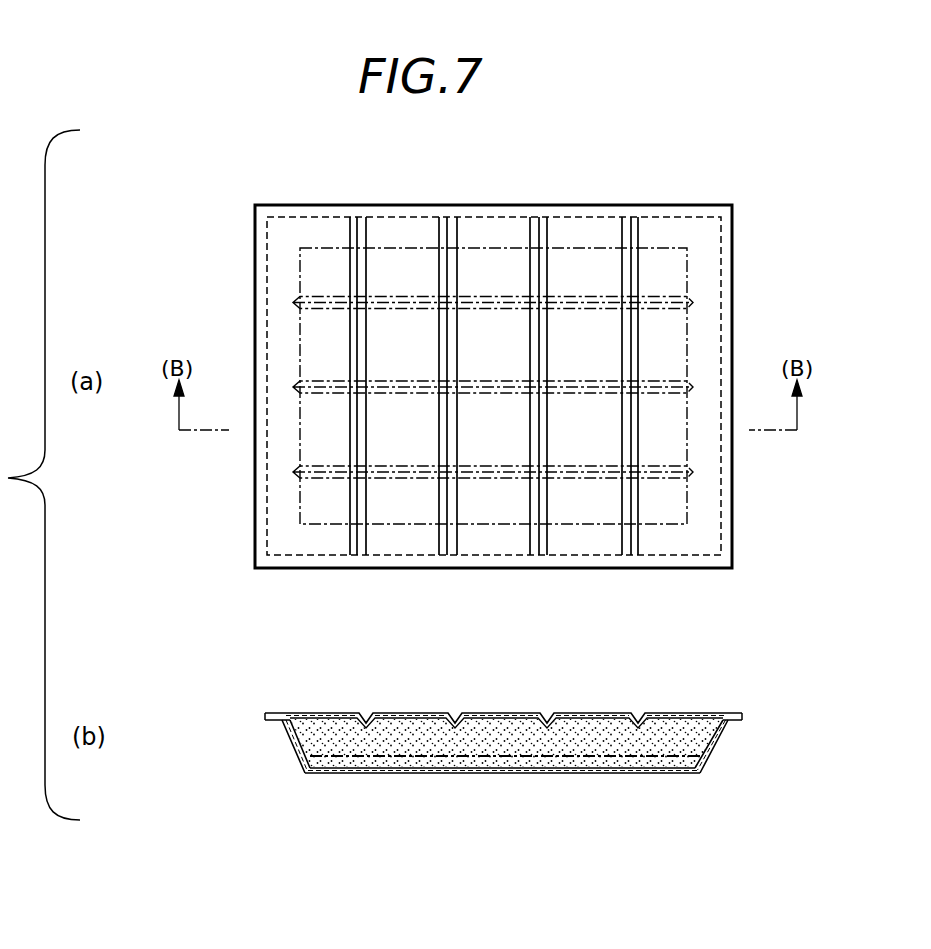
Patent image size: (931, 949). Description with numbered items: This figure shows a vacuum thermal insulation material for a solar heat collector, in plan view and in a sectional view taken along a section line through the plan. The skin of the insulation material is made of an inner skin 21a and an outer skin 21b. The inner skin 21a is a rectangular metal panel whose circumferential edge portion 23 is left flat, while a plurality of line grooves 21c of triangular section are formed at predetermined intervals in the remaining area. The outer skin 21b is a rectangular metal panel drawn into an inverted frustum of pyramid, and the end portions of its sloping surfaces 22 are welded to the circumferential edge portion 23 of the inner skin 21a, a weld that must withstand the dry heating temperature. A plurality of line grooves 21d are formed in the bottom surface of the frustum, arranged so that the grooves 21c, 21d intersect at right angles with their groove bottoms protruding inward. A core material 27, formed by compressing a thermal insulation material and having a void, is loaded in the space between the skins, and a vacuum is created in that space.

The inner skin 21a is at (677, 228).
The outer skin 21b is at (688, 263).
The line grooves 21c is at (451, 238).
The line grooves 21d is at (586, 300).
The sloping surfaces 22 is at (284, 738).
The circumferential edge portion 23 is at (272, 205).
The core material 27 is at (392, 740).